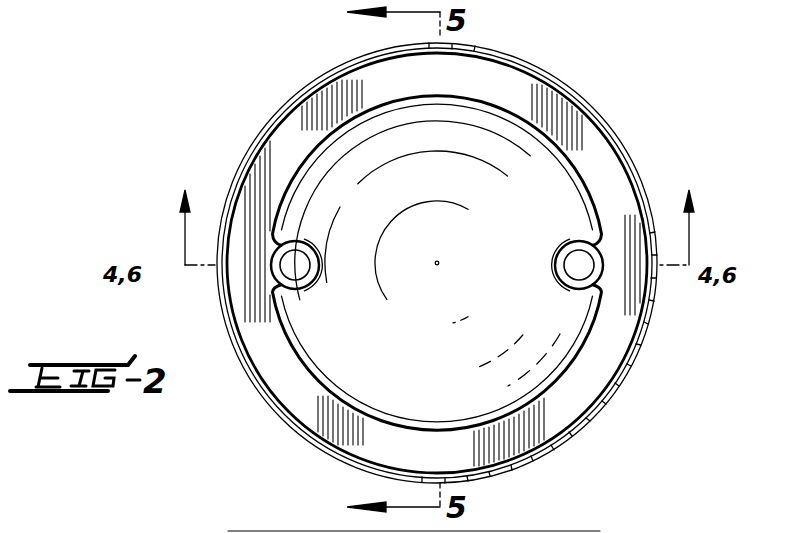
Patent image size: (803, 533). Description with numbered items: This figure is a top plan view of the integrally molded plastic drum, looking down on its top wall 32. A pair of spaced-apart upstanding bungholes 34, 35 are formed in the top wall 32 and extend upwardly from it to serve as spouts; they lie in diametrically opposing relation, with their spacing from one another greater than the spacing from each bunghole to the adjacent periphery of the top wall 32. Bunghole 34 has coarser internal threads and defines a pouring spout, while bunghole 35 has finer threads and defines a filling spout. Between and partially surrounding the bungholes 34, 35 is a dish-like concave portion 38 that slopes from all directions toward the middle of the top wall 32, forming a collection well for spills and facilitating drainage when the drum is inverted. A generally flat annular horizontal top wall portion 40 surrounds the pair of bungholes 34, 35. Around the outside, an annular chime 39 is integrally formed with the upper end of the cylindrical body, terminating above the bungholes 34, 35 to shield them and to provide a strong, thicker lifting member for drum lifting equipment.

The top wall 32 is at (512, 92).
The bunghole 34 is at (305, 270).
The bunghole 35 is at (575, 254).
The concave portion 38 is at (443, 405).
The annular chime 39 is at (297, 92).
The flat annular horizontal top wall portion 40 is at (590, 150).